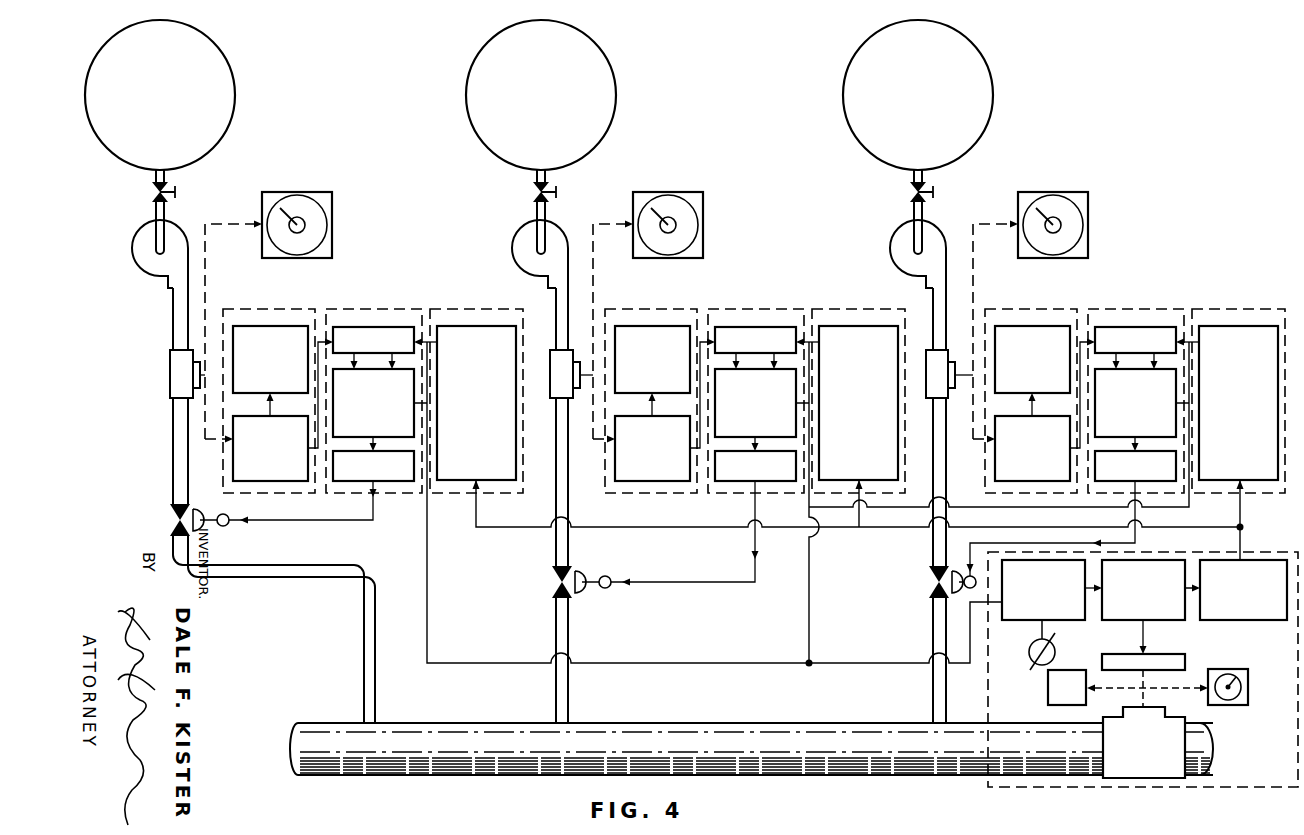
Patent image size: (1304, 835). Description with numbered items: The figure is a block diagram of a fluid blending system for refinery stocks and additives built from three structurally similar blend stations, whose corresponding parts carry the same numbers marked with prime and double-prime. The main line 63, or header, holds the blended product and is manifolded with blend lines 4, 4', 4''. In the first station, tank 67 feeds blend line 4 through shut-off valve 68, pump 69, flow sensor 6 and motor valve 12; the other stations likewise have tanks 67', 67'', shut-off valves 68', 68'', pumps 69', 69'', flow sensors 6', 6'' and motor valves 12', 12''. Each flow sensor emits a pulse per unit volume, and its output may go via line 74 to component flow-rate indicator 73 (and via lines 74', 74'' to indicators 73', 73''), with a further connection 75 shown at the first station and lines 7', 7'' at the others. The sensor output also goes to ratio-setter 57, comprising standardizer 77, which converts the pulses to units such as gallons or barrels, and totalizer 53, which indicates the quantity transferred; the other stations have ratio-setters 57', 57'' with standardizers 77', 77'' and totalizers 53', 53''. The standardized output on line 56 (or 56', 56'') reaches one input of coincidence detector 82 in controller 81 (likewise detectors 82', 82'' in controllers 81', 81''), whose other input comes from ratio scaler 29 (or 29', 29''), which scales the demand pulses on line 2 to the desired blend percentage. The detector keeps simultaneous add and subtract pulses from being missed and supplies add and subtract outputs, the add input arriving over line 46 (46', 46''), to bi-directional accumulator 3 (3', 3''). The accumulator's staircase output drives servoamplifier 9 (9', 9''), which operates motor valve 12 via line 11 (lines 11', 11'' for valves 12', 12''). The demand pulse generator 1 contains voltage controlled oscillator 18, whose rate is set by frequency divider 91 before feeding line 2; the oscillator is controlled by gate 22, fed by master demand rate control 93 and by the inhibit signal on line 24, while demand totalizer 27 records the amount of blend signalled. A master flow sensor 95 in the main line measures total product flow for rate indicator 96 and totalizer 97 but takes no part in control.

The demand pulse generator 1 is at (1290, 552).
The line 2 is at (487, 529).
The bi-directional accumulator 3 is at (380, 410).
The bi-directional accumulator 3' is at (762, 410).
The bi-directional accumulator 3'' is at (1142, 410).
The blend line 4 is at (274, 629).
The blend line 4' is at (591, 660).
The blend line 4'' is at (906, 660).
The flow sensor 6 is at (154, 396).
The flow sensor 6' is at (562, 427).
The flow sensor 6'' is at (939, 427).
The line 7' is at (595, 445).
The line 7'' is at (976, 450).
The servoamplifier 9 is at (373, 466).
The servoamplifier 9' is at (755, 466).
The servoamplifier 9'' is at (1135, 466).
The line 11 is at (303, 515).
The line 11' is at (703, 547).
The line 11'' is at (1081, 528).
The motor valve 12 is at (164, 519).
The motor valve 12' is at (548, 588).
The motor valve 12'' is at (924, 578).
The voltage controlled oscillator 18 is at (1160, 602).
The gate 22 is at (1060, 602).
The line 24 is at (668, 662).
The demand totalizer 27 is at (1155, 658).
The ratio scaler 29 is at (476, 387).
The ratio scaler 29' is at (858, 387).
The ratio scaler 29'' is at (1239, 381).
The output line 46 is at (442, 307).
The output line 46' is at (817, 313).
The output line 46'' is at (1202, 314).
The totalizer 53 is at (270, 359).
The totalizer 53' is at (652, 359).
The totalizer 53'' is at (1032, 359).
The line 56 is at (334, 358).
The line 56' is at (718, 358).
The line 56'' is at (1102, 358).
The ratio-setter 57 is at (269, 382).
The ratio-setter 57' is at (651, 382).
The ratio-setter 57'' is at (1031, 382).
The main line 63 is at (722, 722).
The tank 67 is at (160, 95).
The tank 67' is at (541, 95).
The tank 67'' is at (918, 95).
The shut-off valve 68 is at (132, 185).
The shut-off valve 68' is at (513, 185).
The shut-off valve 68'' is at (881, 185).
The pump 69 is at (138, 246).
The pump 69' is at (519, 246).
The pump 69'' is at (888, 246).
The component flow-rate indicator 73 is at (304, 204).
The component flow-rate indicator 73' is at (682, 204).
The component flow-rate indicator 73'' is at (1068, 204).
The line 74 is at (233, 316).
The line 74' is at (613, 316).
The line 74'' is at (994, 315).
The pressure line 75 is at (205, 430).
The standardizer 77 is at (270, 437).
The standardizer 77' is at (652, 437).
The standardizer 77'' is at (1032, 437).
The controller 81 is at (374, 381).
The controller 81' is at (758, 381).
The controller 81'' is at (1144, 380).
The coincidence detector 82 is at (373, 348).
The coincidence detector 82' is at (755, 348).
The coincidence detector 82'' is at (1135, 348).
The frequency divider 91 is at (1260, 602).
The master demand rate control 93 is at (1055, 648).
The master flow sensor 95 is at (1160, 760).
The rate indicator 96 is at (1228, 669).
The totalizer 97 is at (1058, 681).